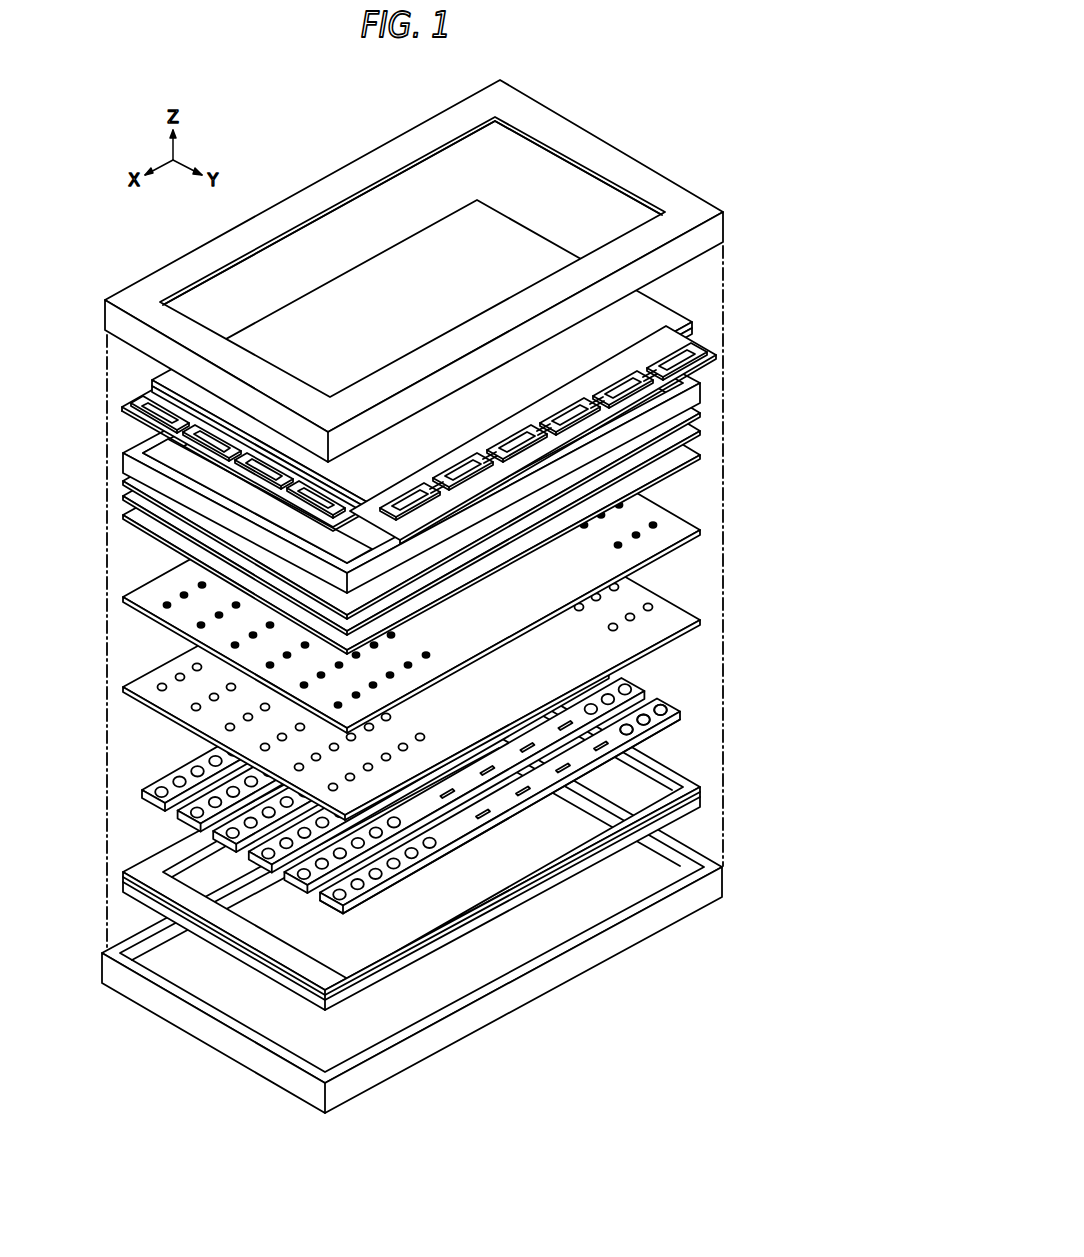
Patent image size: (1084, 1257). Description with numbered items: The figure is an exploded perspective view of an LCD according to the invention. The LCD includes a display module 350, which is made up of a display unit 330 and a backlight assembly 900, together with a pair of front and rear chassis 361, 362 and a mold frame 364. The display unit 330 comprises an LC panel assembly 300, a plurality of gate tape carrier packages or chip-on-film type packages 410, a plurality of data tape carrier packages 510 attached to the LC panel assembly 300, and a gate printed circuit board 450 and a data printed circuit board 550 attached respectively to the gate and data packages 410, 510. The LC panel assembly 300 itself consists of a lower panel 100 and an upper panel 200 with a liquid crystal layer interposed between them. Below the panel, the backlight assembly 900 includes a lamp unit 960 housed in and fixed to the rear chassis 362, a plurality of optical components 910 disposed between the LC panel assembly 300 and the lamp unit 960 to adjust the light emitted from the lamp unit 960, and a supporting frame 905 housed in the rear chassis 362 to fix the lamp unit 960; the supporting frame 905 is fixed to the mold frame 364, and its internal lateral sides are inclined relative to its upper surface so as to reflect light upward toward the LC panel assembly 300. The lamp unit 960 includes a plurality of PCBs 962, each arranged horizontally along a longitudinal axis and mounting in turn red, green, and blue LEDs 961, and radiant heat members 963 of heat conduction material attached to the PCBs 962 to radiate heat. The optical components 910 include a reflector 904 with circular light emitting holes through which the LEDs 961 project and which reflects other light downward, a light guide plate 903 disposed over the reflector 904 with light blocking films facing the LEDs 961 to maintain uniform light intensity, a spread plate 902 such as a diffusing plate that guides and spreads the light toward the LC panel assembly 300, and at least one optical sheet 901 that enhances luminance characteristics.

The lower panel 100 is at (704, 340).
The upper panel 200 is at (697, 320).
The LC panel assembly 300 is at (482, 357).
The display unit 330 is at (703, 280).
The display module 350 is at (72, 795).
The front chassis 361 is at (611, 143).
The rear chassis 362 is at (724, 873).
The mold frame 364 is at (705, 391).
The gate tape carrier packages 410 is at (142, 449).
The gate printed circuit board 450 is at (126, 408).
The data tape carrier packages 510 is at (710, 368).
The data printed circuit board 550 is at (557, 424).
The backlight assembly 900 is at (475, 644).
The optical sheet 901 is at (744, 610).
The spread plate 902 is at (704, 462).
The light guide plate 903 is at (704, 530).
The reflector 904 is at (684, 598).
The supporting frame 905 is at (712, 796).
The optical components 910 is at (453, 549).
The lamp unit 960 is at (450, 755).
The LEDs 961 is at (660, 705).
The PCBs 962 is at (692, 717).
The radiant heat members 963 is at (692, 745).